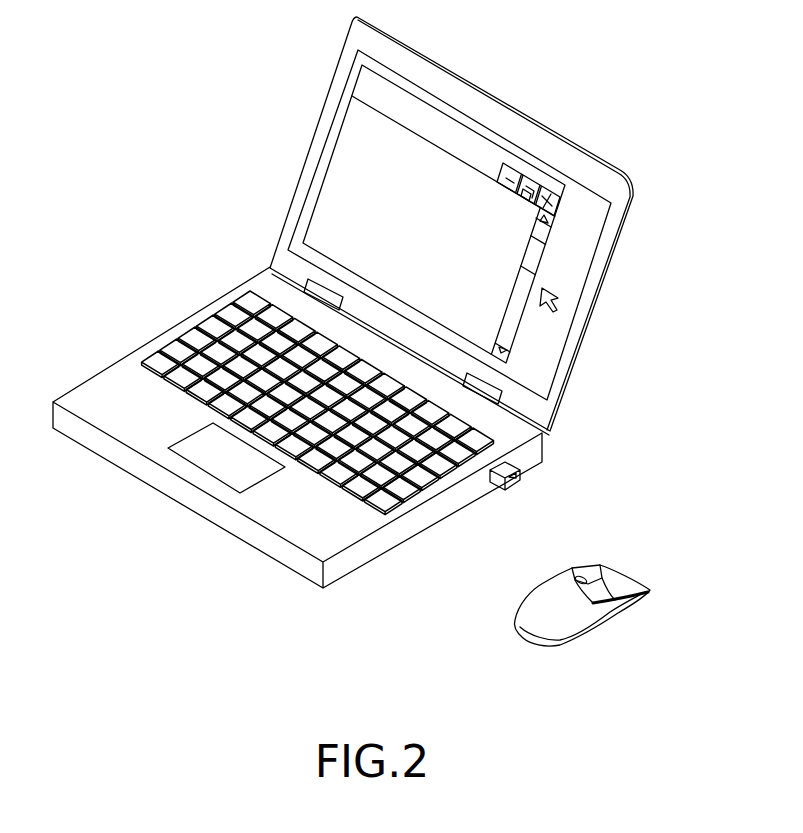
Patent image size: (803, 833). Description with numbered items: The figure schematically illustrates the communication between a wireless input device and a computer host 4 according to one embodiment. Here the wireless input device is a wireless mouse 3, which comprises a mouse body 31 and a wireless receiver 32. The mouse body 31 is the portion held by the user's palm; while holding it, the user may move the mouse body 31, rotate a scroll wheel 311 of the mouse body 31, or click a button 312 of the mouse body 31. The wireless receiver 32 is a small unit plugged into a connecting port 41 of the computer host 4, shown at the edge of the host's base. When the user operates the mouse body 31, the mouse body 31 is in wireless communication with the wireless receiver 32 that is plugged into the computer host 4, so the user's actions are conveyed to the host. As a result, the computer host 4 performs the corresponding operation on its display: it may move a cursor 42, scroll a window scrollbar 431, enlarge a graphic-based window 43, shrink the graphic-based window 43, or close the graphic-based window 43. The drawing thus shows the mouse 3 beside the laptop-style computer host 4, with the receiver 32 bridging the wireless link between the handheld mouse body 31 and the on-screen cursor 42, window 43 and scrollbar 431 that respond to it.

The wireless mouse 3 is at (602, 602).
The mouse body 31 is at (569, 616).
The scroll wheel 311 is at (603, 570).
The button 312 is at (645, 597).
The wireless receiver 32 is at (519, 468).
The computer host 4 is at (365, 302).
The connecting port 41 is at (488, 477).
The cursor 42 is at (549, 287).
The graphic-based window 43 is at (482, 225).
The window scrollbar 431 is at (538, 258).